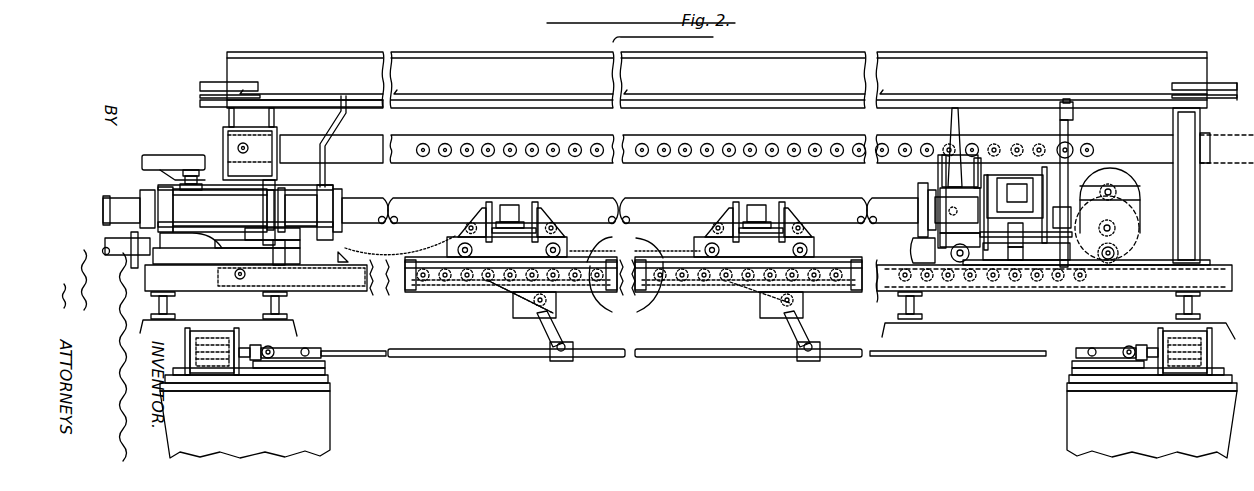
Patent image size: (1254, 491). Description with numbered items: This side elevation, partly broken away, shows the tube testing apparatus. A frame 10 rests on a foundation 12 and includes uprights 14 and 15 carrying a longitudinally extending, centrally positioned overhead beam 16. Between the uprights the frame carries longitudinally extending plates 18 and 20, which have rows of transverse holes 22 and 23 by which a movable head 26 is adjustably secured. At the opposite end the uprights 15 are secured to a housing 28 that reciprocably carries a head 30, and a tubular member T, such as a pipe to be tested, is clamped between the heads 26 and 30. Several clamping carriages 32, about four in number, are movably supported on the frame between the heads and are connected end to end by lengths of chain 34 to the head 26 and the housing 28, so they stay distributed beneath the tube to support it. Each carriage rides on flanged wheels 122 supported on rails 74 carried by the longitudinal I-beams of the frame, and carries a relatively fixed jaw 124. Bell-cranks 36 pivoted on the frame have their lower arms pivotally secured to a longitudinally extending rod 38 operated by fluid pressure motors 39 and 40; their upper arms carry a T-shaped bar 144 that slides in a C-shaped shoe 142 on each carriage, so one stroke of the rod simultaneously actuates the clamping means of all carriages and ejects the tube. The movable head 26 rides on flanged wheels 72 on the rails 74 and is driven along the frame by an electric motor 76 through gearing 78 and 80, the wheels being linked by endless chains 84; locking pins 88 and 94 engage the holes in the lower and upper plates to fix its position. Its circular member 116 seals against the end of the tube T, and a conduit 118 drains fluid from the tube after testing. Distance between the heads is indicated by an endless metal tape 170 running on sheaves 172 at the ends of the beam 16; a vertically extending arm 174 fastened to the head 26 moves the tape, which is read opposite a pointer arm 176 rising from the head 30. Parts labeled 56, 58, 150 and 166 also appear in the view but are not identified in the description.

The frame 10 is at (150, 280).
The foundation 12 is at (1228, 332).
The uprights 14 is at (1193, 200).
The uprights 15 is at (228, 118).
The overhead beam 16 is at (1134, 56).
The upper plate 18 is at (1147, 140).
The lower plate 20 is at (386, 292).
The transverse holes 22 is at (925, 143).
The transverse holes 23 is at (1020, 284).
The movable head 26 is at (930, 175).
The housing 28 is at (245, 186).
The reciprocable head 30 is at (336, 186).
The clamping carriages 32 is at (458, 240).
The lengths of chain 34 is at (372, 252).
The bell-cranks 36 is at (566, 333).
The operating rod 38 is at (612, 358).
The fluid pressure motor 39 is at (1206, 356).
The fluid pressure motor 40 is at (210, 334).
The valve 56 is at (172, 156).
The pump 58 is at (130, 240).
The flanged wheels 72 is at (918, 250).
The rails 74 is at (625, 245).
The electric motor 76 is at (1128, 183).
The gearing 78 is at (1122, 194).
The gearing 80 is at (1120, 208).
The endless chains 84 is at (1107, 215).
The locking pin 88 is at (1062, 284).
The locking pin 94 is at (1069, 144).
The circular member 116 is at (918, 196).
The conduit 118 is at (934, 214).
The flanged wheels 122 is at (456, 260).
The relatively fixed jaw 124 is at (510, 205).
The C-shaped shoe 142 is at (716, 285).
The T-shaped bar 144 is at (626, 290).
The posts 150 is at (488, 203).
The pin 166 is at (506, 202).
The endless metal tape 170 is at (694, 96).
The sheaves 172 is at (200, 88).
The vertically extending arm 174 is at (963, 120).
The pointer arm 176 is at (343, 112).
The tubular member T is at (619, 199).